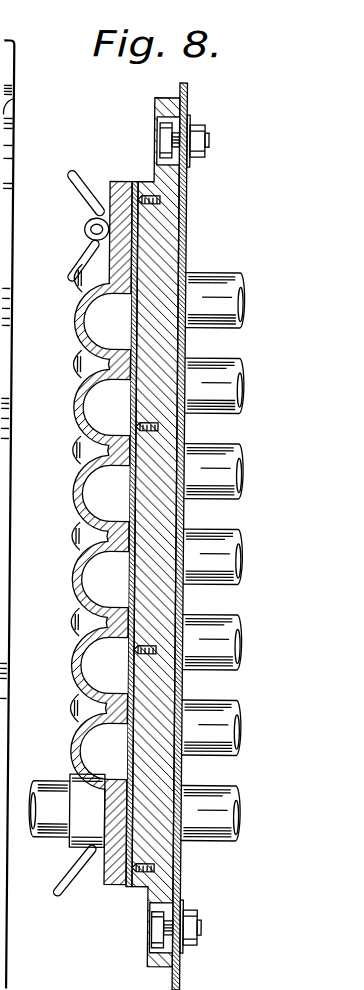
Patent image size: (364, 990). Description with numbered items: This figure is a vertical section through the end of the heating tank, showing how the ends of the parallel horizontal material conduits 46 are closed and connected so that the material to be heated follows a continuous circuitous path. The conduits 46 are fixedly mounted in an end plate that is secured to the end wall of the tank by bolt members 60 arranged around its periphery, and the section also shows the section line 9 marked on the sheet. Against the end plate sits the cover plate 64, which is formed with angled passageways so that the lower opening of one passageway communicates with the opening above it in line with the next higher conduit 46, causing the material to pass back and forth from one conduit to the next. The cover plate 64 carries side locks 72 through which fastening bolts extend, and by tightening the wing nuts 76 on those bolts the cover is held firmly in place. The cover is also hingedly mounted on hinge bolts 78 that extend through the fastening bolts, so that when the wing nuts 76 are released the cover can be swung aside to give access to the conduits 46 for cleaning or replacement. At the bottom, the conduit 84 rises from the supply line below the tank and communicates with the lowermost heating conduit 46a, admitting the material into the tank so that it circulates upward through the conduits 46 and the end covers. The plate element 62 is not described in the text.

The bolt member 60 is at (157, 133).
The mounting plate 62 is at (185, 168).
The wing nut 76 is at (69, 176).
The side lock 72 is at (0, 253).
The section line 9 is at (0, 470).
The hinge bolt 78 is at (0, 573).
The cover plate 64 is at (73, 668).
The material conduit 46 is at (227, 585).
The lowermost heating conduit 46a is at (213, 842).
The conduit 84 is at (49, 782).